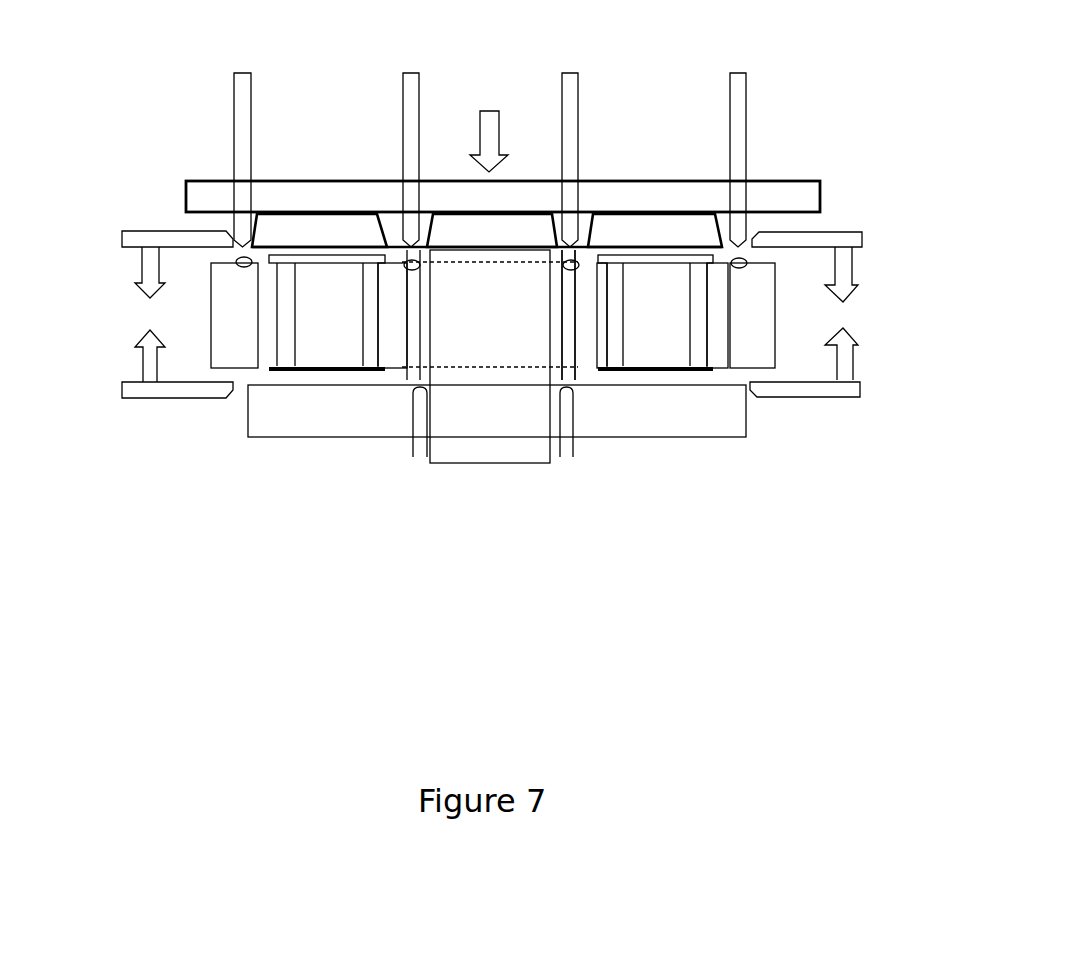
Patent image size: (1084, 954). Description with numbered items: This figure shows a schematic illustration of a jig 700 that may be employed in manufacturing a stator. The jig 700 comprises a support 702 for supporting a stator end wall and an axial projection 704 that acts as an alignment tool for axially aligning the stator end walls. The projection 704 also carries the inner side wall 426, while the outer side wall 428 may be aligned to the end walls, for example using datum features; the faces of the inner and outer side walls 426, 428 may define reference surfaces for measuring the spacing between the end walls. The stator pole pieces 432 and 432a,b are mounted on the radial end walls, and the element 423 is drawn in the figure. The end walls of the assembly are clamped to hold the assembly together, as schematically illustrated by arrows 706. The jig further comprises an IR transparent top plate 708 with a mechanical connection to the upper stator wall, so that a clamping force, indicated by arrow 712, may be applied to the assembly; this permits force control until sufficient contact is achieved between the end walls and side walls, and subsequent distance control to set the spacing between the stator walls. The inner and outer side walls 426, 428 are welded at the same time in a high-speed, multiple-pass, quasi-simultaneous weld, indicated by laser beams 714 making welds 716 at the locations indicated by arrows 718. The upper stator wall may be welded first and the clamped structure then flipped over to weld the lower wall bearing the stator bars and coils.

The jig 700 is at (225, 597).
The support 702 is at (358, 425).
The axial projection 704 is at (510, 350).
The clamping arrows 706 is at (433, 215).
The IR transparent top plate 708 is at (790, 193).
The clamping force arrow 712 is at (485, 133).
The laser beams 714 is at (233, 113).
The welds 716 is at (243, 262).
The weld location arrows 718 is at (410, 247).
The bobbin 423 is at (697, 355).
The inner cylindrical side wall 426 is at (568, 343).
The outer cylindrical side wall 428 is at (220, 360).
The stator pole pieces 432 is at (487, 415).
The stator pole pieces 432a,b is at (337, 357).